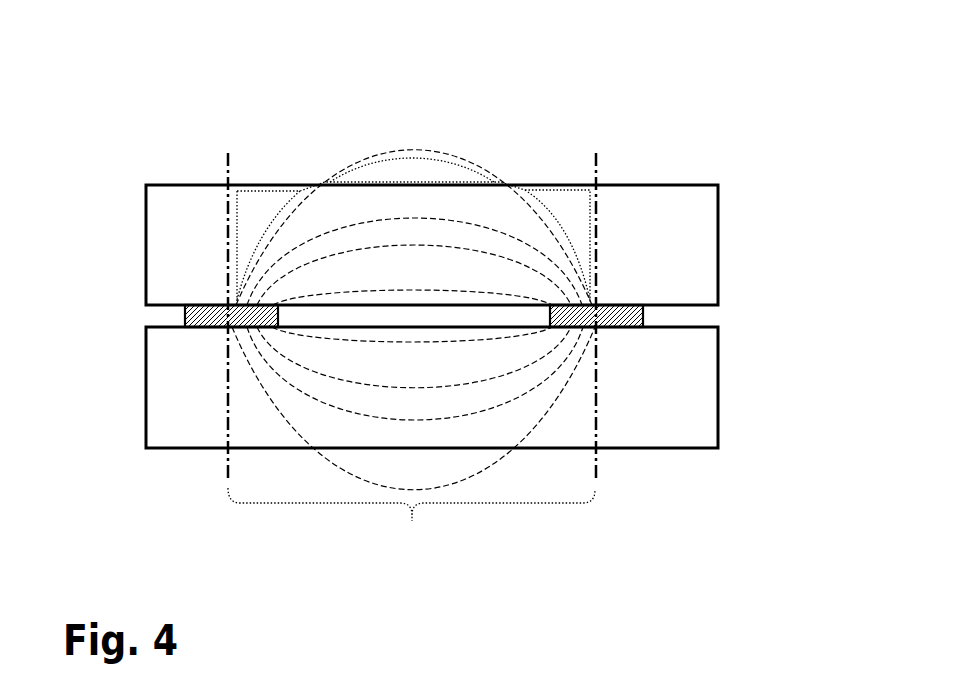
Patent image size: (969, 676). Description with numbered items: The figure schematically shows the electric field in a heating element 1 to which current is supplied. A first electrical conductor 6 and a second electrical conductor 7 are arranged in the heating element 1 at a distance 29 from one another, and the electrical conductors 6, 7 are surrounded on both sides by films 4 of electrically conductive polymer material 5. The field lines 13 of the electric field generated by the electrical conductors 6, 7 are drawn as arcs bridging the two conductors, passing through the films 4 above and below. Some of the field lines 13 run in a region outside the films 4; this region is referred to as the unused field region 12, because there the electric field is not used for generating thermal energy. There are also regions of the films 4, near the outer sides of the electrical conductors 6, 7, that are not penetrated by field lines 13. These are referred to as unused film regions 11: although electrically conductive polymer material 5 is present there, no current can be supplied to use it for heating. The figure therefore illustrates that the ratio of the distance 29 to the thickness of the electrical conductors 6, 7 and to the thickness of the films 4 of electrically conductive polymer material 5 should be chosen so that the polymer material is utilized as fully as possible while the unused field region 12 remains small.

The heating element 1 is at (107, 150).
The film 4 is at (688, 233).
The electrically conductive polymer material 5 is at (688, 397).
The first electrical conductor 6 is at (205, 328).
The second electrical conductor 7 is at (615, 328).
The unused film region 11 is at (266, 210).
The unused field region 12 is at (402, 168).
The field lines 13 is at (496, 225).
The distance 29 is at (412, 359).